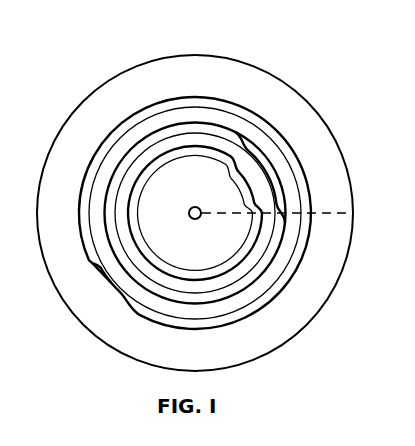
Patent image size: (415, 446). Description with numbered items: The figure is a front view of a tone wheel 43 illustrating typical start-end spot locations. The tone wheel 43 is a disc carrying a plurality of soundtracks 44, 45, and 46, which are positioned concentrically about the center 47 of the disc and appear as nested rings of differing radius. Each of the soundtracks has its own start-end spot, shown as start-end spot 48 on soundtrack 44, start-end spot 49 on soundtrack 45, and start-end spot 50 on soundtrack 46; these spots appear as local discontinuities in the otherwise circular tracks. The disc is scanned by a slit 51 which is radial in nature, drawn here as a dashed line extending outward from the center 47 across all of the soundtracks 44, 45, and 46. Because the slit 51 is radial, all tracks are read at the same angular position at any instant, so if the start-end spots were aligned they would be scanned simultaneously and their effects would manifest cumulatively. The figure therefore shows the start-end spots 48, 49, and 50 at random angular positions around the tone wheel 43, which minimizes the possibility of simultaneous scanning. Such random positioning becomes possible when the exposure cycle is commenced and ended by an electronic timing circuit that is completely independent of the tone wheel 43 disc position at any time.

The tone wheel 43 is at (92, 92).
The soundtrack 44 is at (88, 262).
The soundtrack 45 is at (268, 272).
The soundtrack 46 is at (258, 172).
The center 47 is at (190, 208).
The start-end spot 48 is at (111, 284).
The start-end spot 49 is at (258, 214).
The start-end spot 50 is at (241, 140).
The slit 51 is at (343, 213).